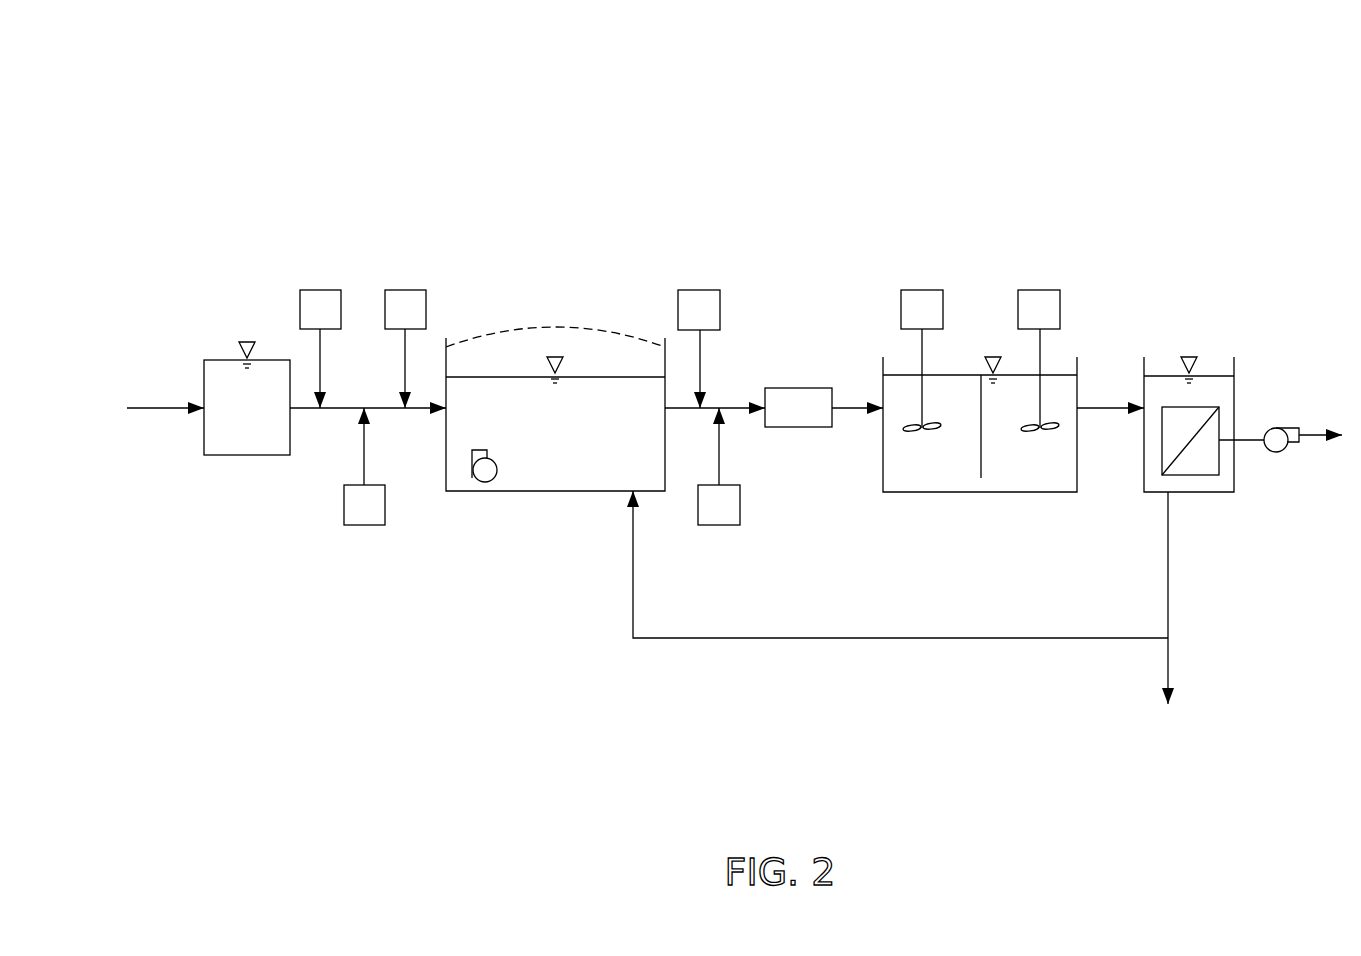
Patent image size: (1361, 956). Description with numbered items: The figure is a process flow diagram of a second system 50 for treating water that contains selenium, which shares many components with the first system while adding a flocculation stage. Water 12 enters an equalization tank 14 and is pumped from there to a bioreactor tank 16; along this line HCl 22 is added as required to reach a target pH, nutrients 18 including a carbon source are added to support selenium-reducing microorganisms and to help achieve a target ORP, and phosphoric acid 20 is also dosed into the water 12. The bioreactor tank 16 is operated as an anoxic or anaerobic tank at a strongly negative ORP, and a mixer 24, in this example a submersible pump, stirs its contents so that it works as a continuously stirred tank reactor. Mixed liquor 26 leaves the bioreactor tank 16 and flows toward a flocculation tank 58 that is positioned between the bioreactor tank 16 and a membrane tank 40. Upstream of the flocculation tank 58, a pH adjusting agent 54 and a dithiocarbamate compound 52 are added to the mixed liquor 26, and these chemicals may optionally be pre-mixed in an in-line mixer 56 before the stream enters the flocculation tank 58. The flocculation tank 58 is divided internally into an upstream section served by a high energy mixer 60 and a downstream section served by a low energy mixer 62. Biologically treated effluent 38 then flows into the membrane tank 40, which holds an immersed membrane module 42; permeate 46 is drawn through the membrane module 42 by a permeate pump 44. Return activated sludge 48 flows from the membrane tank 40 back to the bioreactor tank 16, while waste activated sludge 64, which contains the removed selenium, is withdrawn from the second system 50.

The water 12 is at (165, 402).
The equalization tank 14 is at (223, 357).
The bioreactor tank 16 is at (555, 493).
The nutrients 18 is at (363, 525).
The phosphoric acid 20 is at (404, 290).
The HCl 22 is at (320, 290).
The mixer 24 is at (483, 484).
The mixed liquor 26 is at (682, 415).
The biologically treated effluent 38 is at (1098, 400).
The membrane tank 40 is at (1144, 363).
The membrane module 42 is at (1199, 478).
The permeate pump 44 is at (1278, 452).
The permeate 46 is at (1318, 426).
The return activated sludge 48 is at (910, 640).
The second system 50 is at (1132, 165).
The dithiocarbamate compound 52 is at (718, 525).
The pH adjusting agent 54 is at (699, 290).
The in-line mixer 56 is at (798, 388).
The flocculation tank 58 is at (979, 494).
The high energy mixer 60 is at (921, 290).
The low energy mixer 62 is at (1039, 290).
The waste activated sludge 64 is at (1172, 662).